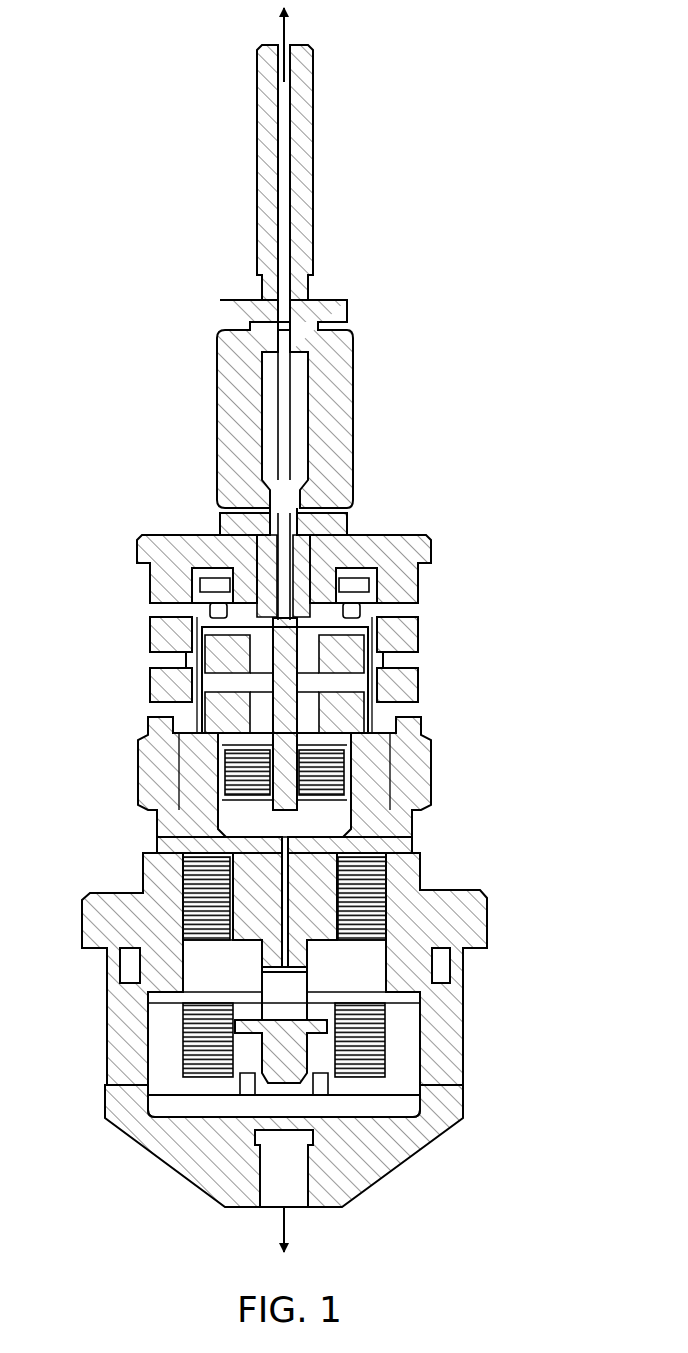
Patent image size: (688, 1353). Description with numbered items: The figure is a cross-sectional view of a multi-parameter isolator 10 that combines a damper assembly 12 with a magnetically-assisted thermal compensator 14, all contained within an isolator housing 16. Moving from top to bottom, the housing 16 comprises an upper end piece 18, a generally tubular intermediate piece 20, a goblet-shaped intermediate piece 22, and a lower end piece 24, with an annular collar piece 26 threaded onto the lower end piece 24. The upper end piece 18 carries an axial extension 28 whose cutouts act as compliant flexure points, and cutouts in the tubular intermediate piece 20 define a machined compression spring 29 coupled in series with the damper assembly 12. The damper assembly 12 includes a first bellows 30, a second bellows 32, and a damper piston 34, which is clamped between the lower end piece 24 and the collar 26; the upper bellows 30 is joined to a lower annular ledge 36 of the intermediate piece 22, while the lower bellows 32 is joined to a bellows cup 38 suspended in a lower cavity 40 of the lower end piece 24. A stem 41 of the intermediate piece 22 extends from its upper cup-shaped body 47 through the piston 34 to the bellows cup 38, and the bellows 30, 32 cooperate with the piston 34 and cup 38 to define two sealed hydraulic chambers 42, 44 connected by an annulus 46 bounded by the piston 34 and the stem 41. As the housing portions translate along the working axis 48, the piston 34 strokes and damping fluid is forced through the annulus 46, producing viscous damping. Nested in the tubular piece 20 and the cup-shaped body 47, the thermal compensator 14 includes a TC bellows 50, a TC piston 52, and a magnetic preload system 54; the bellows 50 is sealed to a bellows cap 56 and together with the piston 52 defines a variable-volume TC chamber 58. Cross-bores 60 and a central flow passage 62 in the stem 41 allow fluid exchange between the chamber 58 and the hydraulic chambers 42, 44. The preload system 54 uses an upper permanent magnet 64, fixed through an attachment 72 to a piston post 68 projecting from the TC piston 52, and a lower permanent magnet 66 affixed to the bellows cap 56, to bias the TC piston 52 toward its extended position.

The multi-parameter isolator 10 is at (140, 160).
The damper assembly 12 is at (442, 988).
The magnetically-assisted thermal compensator 14 is at (393, 727).
The isolator housing 16 is at (428, 530).
The upper end piece 18 is at (348, 400).
The tubular intermediate piece 20 is at (418, 585).
The goblet-shaped intermediate piece 22 is at (183, 742).
The lower end piece 24 is at (382, 1165).
The annular collar piece 26 is at (480, 912).
The axial extension 28 is at (312, 160).
The machined compression spring 29 is at (418, 645).
The first bellows 30 is at (177, 885).
The second bellows 32 is at (188, 1047).
The damper piston 34 is at (175, 958).
The lower annular ledge 36 is at (218, 850).
The bellows cup 38 is at (200, 1088).
The lower cavity 40 is at (157, 1072).
The stem 41 is at (299, 1011).
The hydraulic chamber 42 is at (150, 895).
The hydraulic chamber 44 is at (220, 1025).
The annulus 46 is at (310, 950).
The upper cup-shaped body 47 is at (192, 788).
The working axis 48 is at (283, 26).
The TC bellows 50 is at (218, 755).
The TC piston 52 is at (285, 810).
The magnetic preload system 54 is at (187, 732).
The bellows cap 56 is at (390, 742).
The variable-volume TC chamber 58 is at (228, 818).
The cross-bores 60 is at (262, 976).
The flow passage 62 is at (283, 900).
The upper permanent magnet 64 is at (340, 643).
The lower permanent magnet 66 is at (227, 702).
The piston post 68 is at (280, 647).
The attachment 72 is at (305, 640).